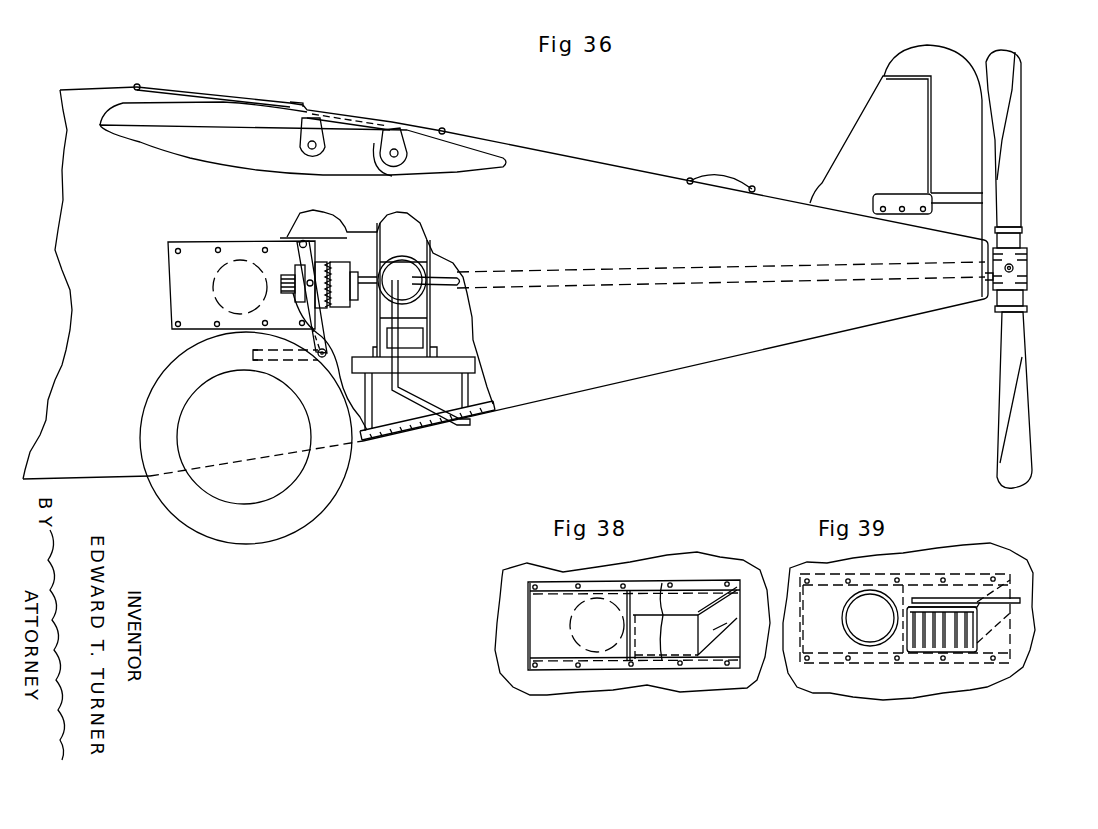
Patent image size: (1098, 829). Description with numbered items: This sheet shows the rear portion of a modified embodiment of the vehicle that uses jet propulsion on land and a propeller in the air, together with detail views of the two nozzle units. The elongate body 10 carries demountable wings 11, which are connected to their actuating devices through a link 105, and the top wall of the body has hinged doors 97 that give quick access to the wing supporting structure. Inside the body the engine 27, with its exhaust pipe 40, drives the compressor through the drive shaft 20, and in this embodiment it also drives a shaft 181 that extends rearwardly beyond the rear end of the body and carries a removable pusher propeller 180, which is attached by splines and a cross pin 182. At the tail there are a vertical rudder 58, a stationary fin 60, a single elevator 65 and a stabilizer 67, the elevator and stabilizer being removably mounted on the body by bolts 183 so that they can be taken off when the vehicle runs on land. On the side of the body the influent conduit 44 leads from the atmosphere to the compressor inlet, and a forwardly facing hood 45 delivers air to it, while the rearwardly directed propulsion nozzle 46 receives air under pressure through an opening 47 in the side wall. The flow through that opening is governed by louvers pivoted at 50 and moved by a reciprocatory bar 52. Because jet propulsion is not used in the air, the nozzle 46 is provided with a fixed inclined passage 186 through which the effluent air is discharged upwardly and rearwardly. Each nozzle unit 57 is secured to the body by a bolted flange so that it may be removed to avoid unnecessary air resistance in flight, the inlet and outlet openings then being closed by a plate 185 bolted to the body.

In FIG. 36, the body 10 is at (549, 396).
In FIG. 38, the body 10 is at (713, 687).
In FIG. 39, the body 10 is at (1023, 653).
In FIG. 36, the wings 11 is at (258, 152).
In FIG. 36, the drive shaft 20 is at (368, 284).
In FIG. 36, the engine 27 is at (418, 296).
In FIG. 38, the exhaust pipe 40 is at (513, 628).
In FIG. 39, the exhaust pipe 40 is at (905, 618).
In FIG. 38, the influent conduit 44 is at (595, 637).
In FIG. 39, the influent conduit 44 is at (880, 630).
In FIG. 38, the influent hood or nozzle 45 is at (533, 633).
In FIG. 39, the influent hood or nozzle 45 is at (813, 645).
In FIG. 38, the propulsion nozzle 46 is at (660, 620).
In FIG. 39, the opening 47 is at (943, 642).
In FIG. 39, the louver pivots 50 is at (970, 650).
In FIG. 39, the reciprocatory bar 52 is at (983, 602).
In FIG. 39, the nozzle unit 57 is at (910, 578).
In FIG. 36, the vertical rudder 58 is at (948, 58).
In FIG. 36, the stationary fin 60 is at (858, 127).
In FIG. 36, the elevator 65 is at (945, 201).
In FIG. 36, the stabilizer 67 is at (891, 200).
In FIG. 36, the doors 97 is at (235, 96).
In FIG. 36, the link 105 is at (353, 118).
In FIG. 36, the pusher propeller 180 is at (1010, 141).
In FIG. 36, the propeller shaft 181 is at (448, 270).
In FIG. 36, the cross pin 182 is at (1022, 270).
In FIG. 36, the bolts 183 is at (901, 212).
In FIG. 36, the closure plate 185 is at (168, 316).
In FIG. 38, the fixed inclined passage 186 is at (713, 630).
In FIG. 39, the fixed inclined passage 186 is at (978, 618).